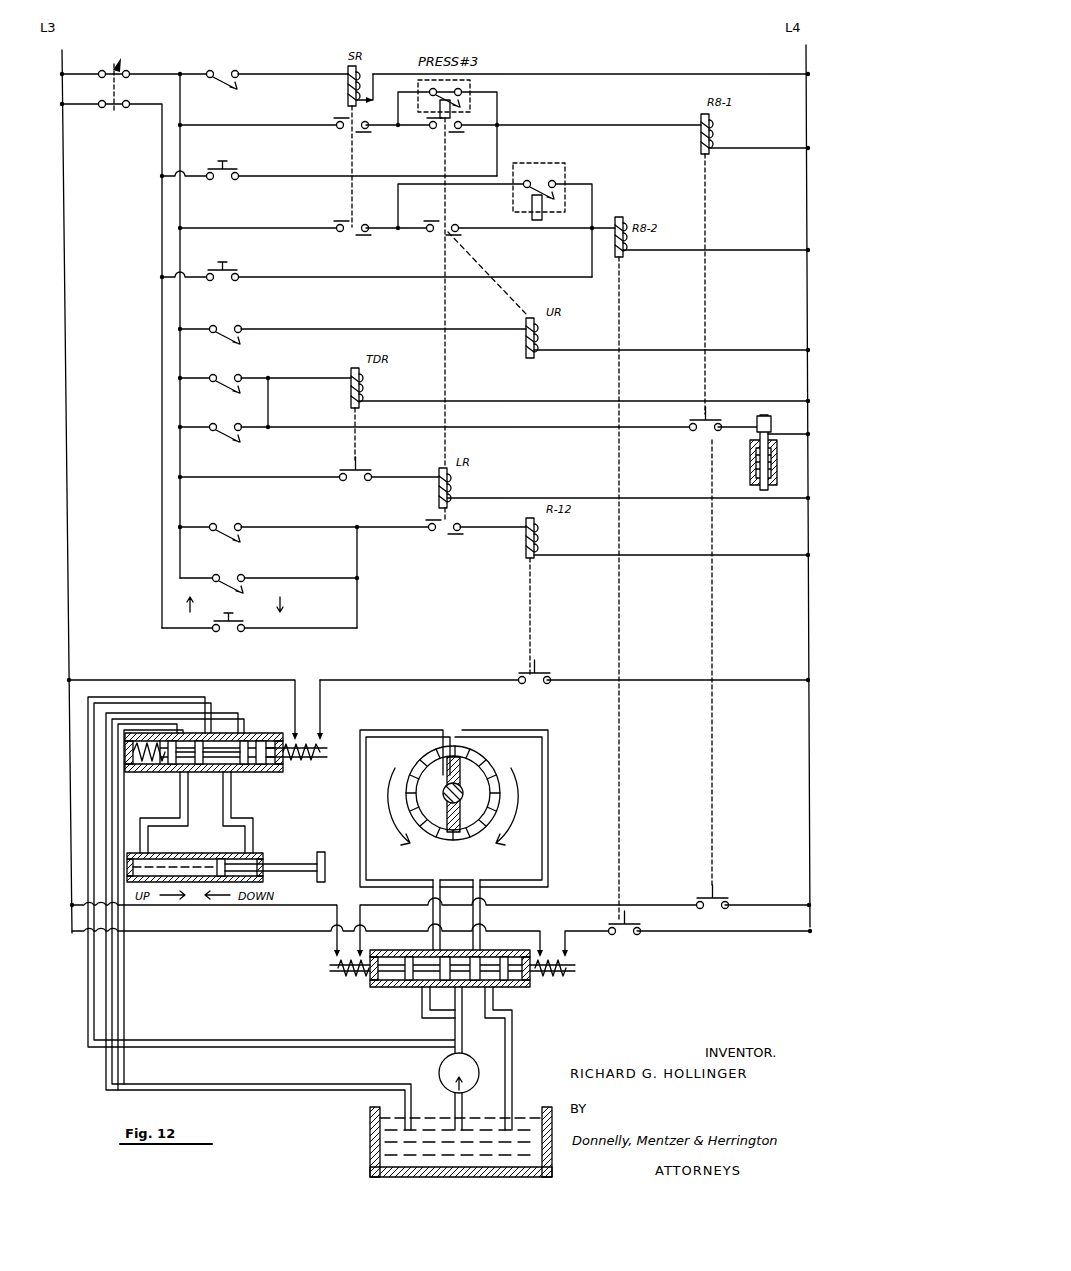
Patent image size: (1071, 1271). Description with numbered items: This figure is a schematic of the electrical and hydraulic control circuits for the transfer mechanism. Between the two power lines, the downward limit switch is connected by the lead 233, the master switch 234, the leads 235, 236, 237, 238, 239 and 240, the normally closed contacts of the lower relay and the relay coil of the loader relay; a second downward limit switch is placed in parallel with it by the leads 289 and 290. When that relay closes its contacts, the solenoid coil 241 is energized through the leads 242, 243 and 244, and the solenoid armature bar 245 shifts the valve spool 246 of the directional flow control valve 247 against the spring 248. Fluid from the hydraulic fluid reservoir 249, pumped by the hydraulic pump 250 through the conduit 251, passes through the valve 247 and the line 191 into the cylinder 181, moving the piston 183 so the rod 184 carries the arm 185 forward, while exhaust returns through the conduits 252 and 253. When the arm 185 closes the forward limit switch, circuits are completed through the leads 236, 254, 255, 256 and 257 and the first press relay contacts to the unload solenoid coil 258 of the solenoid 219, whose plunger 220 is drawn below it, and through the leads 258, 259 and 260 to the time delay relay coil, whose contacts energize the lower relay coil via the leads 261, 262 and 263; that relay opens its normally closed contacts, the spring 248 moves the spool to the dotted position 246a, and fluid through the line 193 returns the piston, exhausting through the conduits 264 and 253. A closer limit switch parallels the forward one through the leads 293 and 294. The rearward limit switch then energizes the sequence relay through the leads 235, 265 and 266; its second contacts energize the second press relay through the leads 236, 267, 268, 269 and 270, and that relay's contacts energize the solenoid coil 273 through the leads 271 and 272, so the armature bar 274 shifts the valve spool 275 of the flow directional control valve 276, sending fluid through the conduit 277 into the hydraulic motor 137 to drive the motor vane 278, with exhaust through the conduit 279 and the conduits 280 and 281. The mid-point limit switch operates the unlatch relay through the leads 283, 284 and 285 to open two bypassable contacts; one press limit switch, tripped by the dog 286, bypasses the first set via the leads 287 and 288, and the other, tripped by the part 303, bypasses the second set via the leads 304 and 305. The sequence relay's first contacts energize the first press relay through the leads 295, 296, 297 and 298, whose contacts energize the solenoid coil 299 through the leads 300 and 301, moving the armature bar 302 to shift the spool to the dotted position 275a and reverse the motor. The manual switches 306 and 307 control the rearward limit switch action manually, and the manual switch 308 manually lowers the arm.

The lead 233 is at (86, 81).
The master switch 234 is at (126, 60).
The lead 235 is at (206, 66).
The lead 265 is at (264, 75).
The lead 266 is at (391, 73).
The lead 304 is at (373, 84).
The lead 295 is at (240, 126).
The lead 296 is at (370, 131).
The part 303 is at (438, 114).
The lead 305 is at (498, 122).
The lead 297 is at (598, 126).
The lead 298 is at (739, 150).
The manual switch 306 is at (238, 165).
The lead 236 is at (182, 217).
The lead 267 is at (237, 228).
The lead 268 is at (380, 237).
The lead 287 is at (401, 191).
The dog 286 is at (532, 216).
The lead 288 is at (592, 200).
The lead 269 is at (608, 227).
The lead 270 is at (727, 252).
The manual switch 307 is at (239, 265).
The lead 283 is at (202, 329).
The lead 284 is at (325, 330).
The lead 285 is at (564, 350).
The lead 293 is at (202, 377).
The lead 294 is at (253, 377).
The lead 259 is at (308, 377).
The unload solenoid coil 258 is at (268, 394).
The lead 260 is at (463, 401).
The lead 254 is at (202, 427).
The lead 255 is at (380, 427).
The lead 256 is at (742, 418).
The solenoid 219 is at (750, 470).
The solenoid plunger 220 is at (766, 492).
The lead 257 is at (795, 437).
The lead 261 is at (254, 476).
The lead 262 is at (388, 480).
The lead 263 is at (508, 498).
The lead 237 is at (202, 527).
The lead 238 is at (400, 519).
The lead 239 is at (474, 532).
The lead 240 is at (727, 553).
The lead 290 is at (307, 576).
The lead 289 is at (212, 587).
The manual switch 308 is at (243, 613).
The lead 243 is at (376, 680).
The lead 244 is at (729, 678).
The conduit 251 is at (161, 1042).
The conduit 264 is at (250, 715).
The conduit 252 is at (172, 709).
The conduit 253 is at (112, 962).
The lead 242 is at (290, 696).
The solenoid coil 241 is at (318, 765).
The spring 248 is at (136, 766).
The valve spool 246 is at (246, 738).
The dotted position of valve spool 246a is at (260, 768).
The directional flow control valve 247 is at (288, 764).
The solenoid armature bar 245 is at (318, 741).
The line 193 is at (157, 821).
The line 191 is at (249, 821).
The cylinder 181 is at (195, 851).
The piston 183 is at (217, 874).
The rod 184 is at (287, 859).
The arm 185 is at (322, 849).
The hydraulic motor 137 is at (416, 754).
The motor vane 278 is at (448, 797).
The conduit 279 is at (372, 889).
The conduit 277 is at (500, 889).
The lead 300 is at (218, 905).
The lead 301 is at (746, 905).
The lead 271 is at (164, 938).
The lead 272 is at (725, 931).
The flow directional control valve 276 is at (419, 952).
The valve spool 275 is at (482, 954).
The dotted position of valve spool 275a is at (506, 985).
The armature bar 302 is at (330, 962).
The solenoid coil 299 is at (337, 983).
The armature bar 274 is at (572, 967).
The solenoid coil 273 is at (568, 978).
The conduit 280 is at (424, 995).
The conduit 281 is at (512, 1069).
The hydraulic pump 250 is at (476, 1057).
The hydraulic fluid reservoir 249 is at (369, 1129).